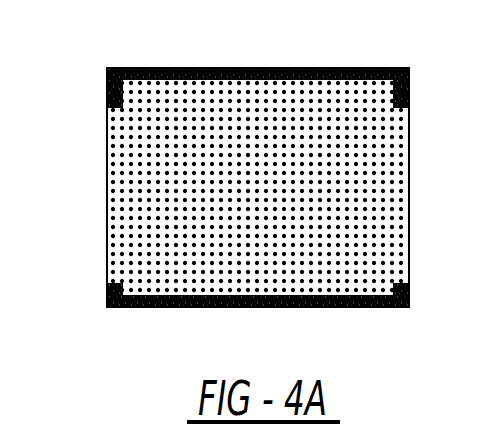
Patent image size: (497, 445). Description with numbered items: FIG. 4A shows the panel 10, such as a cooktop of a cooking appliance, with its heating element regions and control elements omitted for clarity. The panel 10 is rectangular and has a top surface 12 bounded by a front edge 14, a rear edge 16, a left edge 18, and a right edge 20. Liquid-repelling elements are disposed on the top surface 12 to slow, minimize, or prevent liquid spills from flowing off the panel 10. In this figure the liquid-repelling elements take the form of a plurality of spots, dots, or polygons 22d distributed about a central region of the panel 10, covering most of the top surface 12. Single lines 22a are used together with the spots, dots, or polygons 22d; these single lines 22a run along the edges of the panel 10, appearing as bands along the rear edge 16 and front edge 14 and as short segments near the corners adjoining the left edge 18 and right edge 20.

The panel 10 is at (158, 148).
The top surface 12 is at (243, 93).
The front edge 14 is at (338, 307).
The rear edge 16 is at (208, 68).
The left edge 18 is at (107, 215).
The right edge 20 is at (409, 148).
The single lines 22a is at (376, 68).
The plurality of spots, dots, or polygons 22d is at (353, 202).